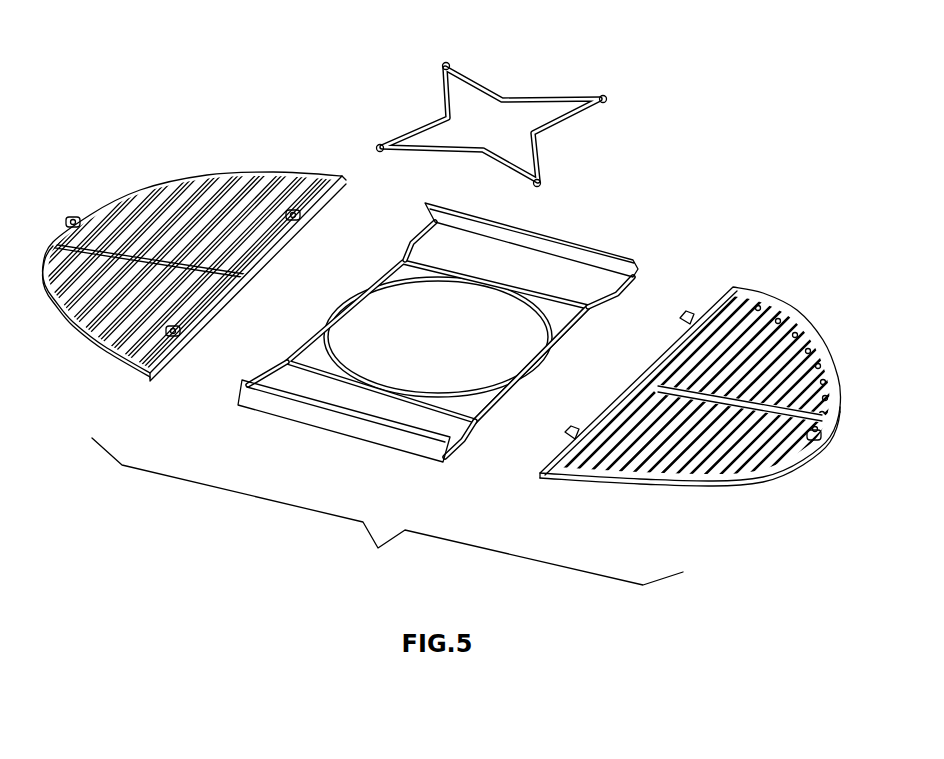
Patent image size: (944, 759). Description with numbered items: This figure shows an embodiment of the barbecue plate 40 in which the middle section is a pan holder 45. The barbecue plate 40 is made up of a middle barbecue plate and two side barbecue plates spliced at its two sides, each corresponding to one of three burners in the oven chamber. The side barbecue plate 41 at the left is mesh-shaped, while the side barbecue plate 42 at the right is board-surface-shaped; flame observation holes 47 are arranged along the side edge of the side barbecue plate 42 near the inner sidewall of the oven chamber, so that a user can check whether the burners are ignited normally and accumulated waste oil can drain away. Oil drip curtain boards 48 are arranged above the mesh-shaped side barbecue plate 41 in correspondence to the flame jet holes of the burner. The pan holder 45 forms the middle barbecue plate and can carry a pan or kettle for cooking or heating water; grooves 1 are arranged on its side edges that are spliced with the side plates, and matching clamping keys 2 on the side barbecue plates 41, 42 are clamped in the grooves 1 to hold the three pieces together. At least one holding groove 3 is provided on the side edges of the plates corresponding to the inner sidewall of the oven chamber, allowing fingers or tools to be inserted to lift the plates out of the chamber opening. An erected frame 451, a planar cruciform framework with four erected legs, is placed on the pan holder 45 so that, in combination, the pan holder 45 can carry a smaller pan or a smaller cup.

The groove 1 is at (441, 332).
The clamping key 2 is at (683, 322).
The holding groove 3 is at (68, 218).
The barbecue plate 40 is at (387, 513).
The side barbecue plate 41 is at (173, 261).
The side barbecue plate 42 is at (632, 503).
The pan holder 45 is at (570, 342).
The flame observation hole 47 is at (787, 320).
The oil drip curtain board 48 is at (163, 207).
The erected frame 451 is at (515, 103).